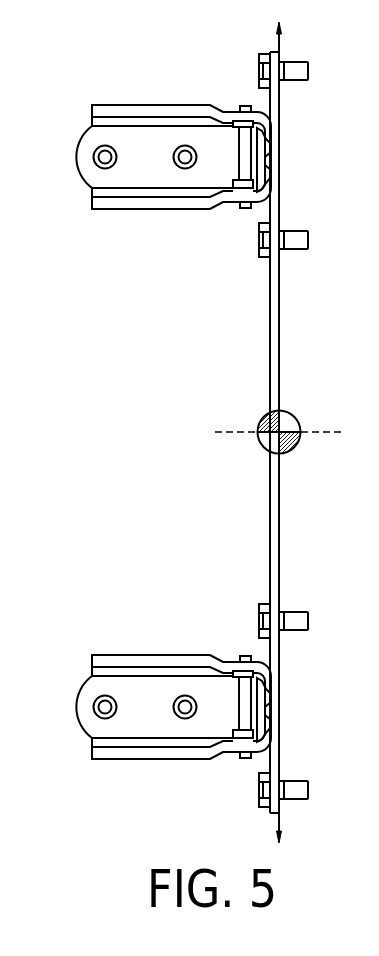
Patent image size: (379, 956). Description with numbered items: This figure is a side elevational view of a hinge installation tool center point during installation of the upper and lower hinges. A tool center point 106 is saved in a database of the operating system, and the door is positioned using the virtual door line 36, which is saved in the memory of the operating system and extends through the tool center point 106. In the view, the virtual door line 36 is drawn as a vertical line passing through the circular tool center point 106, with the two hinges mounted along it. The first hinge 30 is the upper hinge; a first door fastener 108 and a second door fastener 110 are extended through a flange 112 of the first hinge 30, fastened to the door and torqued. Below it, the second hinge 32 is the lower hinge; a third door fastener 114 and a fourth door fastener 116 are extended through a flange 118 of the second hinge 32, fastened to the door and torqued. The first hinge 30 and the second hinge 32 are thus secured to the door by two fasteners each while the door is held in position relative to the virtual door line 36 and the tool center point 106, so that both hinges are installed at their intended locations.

The first hinge 30 is at (208, 175).
The second hinge 32 is at (208, 725).
The virtual door line 36 is at (280, 327).
The tool center point 106 is at (287, 425).
The first door fastener 108 is at (293, 68).
The second door fastener 110 is at (293, 238).
The flange 112 is at (273, 115).
The third door fastener 114 is at (293, 618).
The fourth door fastener 116 is at (293, 788).
The flange 118 is at (287, 707).